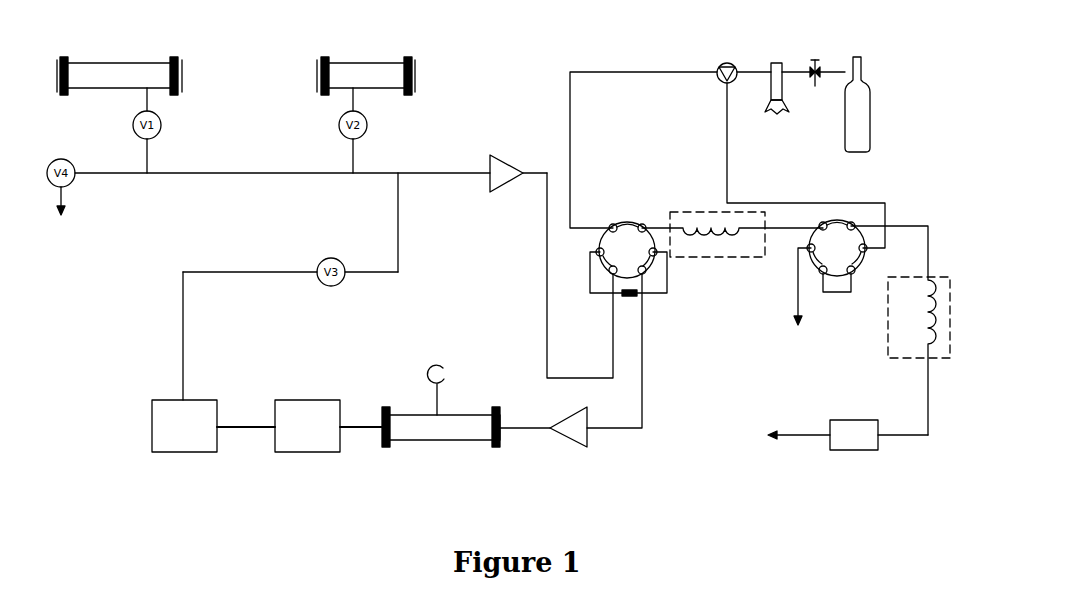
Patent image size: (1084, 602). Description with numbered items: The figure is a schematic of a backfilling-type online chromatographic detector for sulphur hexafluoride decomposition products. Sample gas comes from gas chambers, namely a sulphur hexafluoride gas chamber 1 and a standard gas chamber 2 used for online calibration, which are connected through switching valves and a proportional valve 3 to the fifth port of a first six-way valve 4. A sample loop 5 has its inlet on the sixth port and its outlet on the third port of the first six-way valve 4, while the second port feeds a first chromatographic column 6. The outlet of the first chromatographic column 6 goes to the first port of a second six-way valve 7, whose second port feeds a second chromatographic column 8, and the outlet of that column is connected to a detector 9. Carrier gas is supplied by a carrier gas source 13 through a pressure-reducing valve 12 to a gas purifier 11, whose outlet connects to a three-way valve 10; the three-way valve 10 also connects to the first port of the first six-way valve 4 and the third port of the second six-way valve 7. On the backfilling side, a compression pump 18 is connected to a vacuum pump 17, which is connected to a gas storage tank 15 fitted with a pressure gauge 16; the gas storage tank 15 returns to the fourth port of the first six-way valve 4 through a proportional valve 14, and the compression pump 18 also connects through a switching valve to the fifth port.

The sulphur hexafluoride gas chamber 1 is at (119, 76).
The standard gas chamber 2 is at (366, 76).
The proportional valve 3 is at (506, 173).
The first six-way valve 4 is at (626, 250).
The sample loop 5 is at (632, 297).
The first chromatographic column 6 is at (716, 242).
The second six-way valve 7 is at (837, 248).
The second chromatographic column 8 is at (932, 318).
The detector 9 is at (854, 435).
The three-way valve 10 is at (721, 82).
The gas purifier 11 is at (777, 114).
The pressure-reducing valve 12 is at (817, 80).
The carrier gas source 13 is at (857, 104).
The proportional valve 14 is at (586, 440).
The gas storage tank 15 is at (441, 427).
The pressure gauge 16 is at (446, 368).
The vacuum pump 17 is at (307, 426).
The compression pump 18 is at (184, 426).